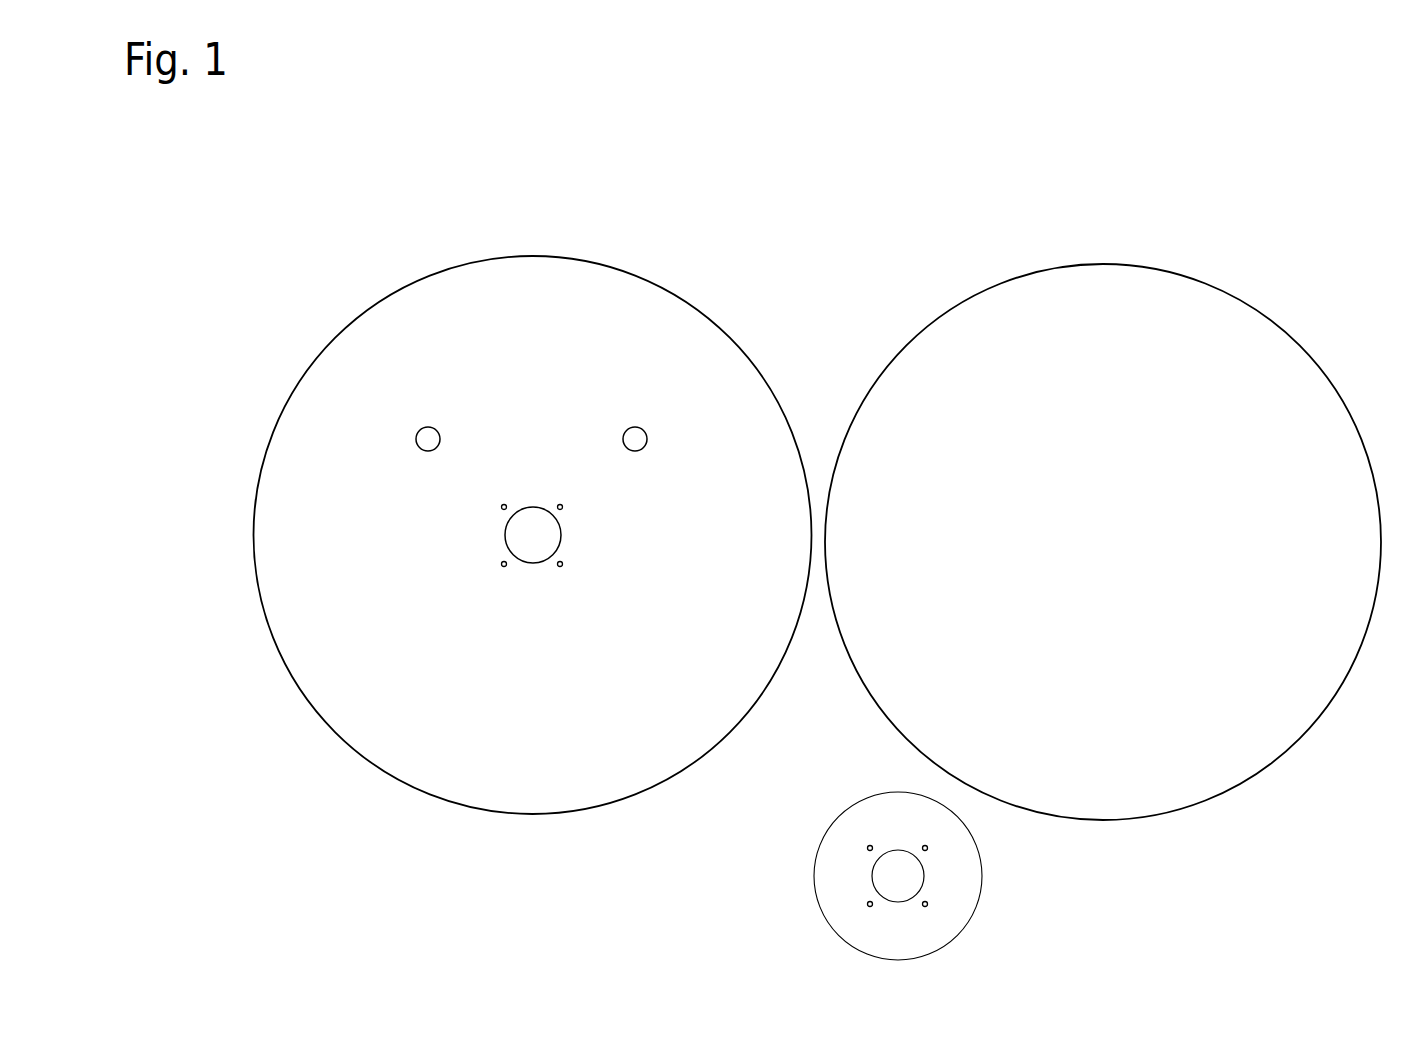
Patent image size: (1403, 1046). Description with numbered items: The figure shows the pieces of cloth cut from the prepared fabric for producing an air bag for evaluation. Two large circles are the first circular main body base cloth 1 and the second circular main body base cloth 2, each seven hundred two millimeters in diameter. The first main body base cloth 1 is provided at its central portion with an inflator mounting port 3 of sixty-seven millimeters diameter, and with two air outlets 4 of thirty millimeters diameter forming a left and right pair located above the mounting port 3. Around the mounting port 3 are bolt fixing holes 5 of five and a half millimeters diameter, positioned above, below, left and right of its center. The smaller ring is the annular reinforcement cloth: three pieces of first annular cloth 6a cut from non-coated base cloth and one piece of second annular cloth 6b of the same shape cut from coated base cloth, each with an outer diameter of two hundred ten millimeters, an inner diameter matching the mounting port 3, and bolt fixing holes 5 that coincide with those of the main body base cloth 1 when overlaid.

The first main body base cloth 1 is at (460, 360).
The second main body base cloth 2 is at (1075, 360).
The inflator mounting port 3 is at (532, 545).
The air outlet 4 is at (636, 435).
The bolt fixing hole 5 is at (570, 562).
The first annular cloth 6a is at (1012, 876).
The second annular cloth 6b is at (1012, 876).